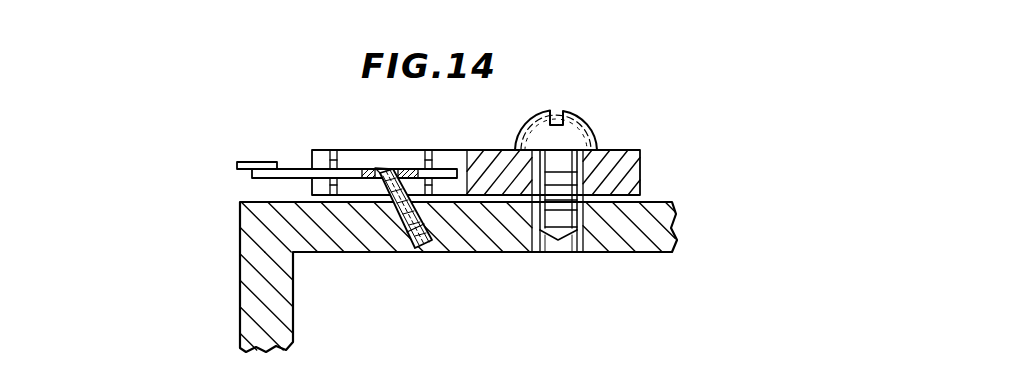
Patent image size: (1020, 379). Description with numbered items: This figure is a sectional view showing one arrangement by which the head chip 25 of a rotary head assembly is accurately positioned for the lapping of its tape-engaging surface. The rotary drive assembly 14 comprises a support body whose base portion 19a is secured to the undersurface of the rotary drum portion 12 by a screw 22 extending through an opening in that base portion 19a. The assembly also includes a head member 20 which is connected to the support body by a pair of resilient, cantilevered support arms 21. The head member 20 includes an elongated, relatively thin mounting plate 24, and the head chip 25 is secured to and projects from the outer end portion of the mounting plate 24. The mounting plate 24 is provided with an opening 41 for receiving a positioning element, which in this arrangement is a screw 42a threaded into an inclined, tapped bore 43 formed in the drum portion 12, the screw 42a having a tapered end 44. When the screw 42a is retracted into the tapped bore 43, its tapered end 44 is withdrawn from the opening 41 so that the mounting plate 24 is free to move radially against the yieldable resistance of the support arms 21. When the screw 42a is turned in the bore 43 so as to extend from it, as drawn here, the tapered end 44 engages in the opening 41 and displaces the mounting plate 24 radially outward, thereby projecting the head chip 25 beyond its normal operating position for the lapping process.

The drum portion 12 is at (242, 313).
The rotary drive assembly 14 is at (564, 161).
The base portion 19a is at (633, 172).
The head member 20 is at (247, 187).
The resilient support arms 21 is at (333, 150).
The screw 22 is at (541, 116).
The mounting plate 24 is at (293, 168).
The head chip 25 is at (247, 161).
The opening 41 is at (394, 168).
The screw 42a is at (425, 250).
The tapped bore 43 is at (400, 252).
The tapered end 44 is at (378, 167).